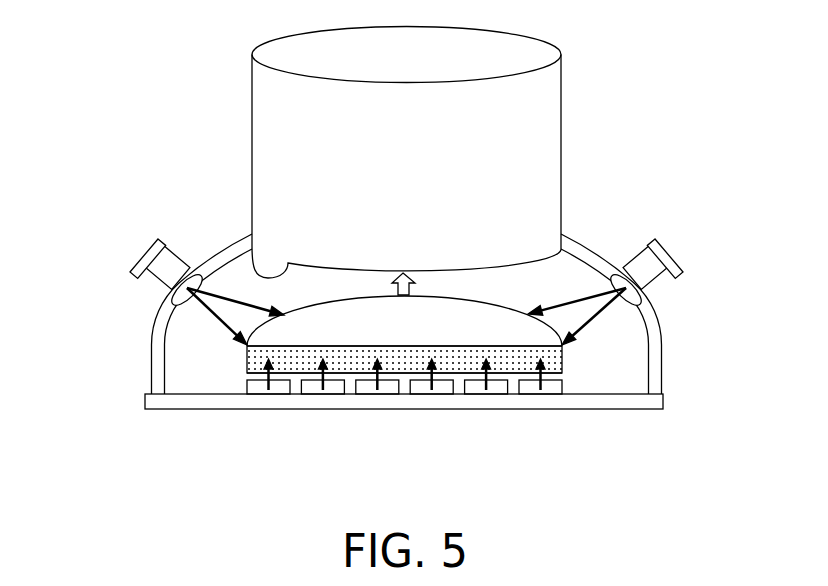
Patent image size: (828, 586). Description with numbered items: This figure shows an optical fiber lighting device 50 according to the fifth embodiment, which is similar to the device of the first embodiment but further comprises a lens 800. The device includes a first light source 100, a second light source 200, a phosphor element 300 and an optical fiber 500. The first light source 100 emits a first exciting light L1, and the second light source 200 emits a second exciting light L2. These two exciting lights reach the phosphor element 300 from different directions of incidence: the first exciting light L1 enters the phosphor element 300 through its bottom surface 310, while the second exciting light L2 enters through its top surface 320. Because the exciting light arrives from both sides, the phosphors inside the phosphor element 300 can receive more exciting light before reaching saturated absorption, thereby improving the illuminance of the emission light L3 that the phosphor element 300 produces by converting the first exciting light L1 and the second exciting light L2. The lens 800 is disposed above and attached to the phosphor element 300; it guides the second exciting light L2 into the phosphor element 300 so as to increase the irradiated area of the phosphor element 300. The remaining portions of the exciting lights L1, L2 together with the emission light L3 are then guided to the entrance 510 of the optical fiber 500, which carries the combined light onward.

The optical fiber lighting device 50 is at (58, 15).
The first light source 100 is at (259, 388).
The second light source 200 is at (153, 278).
The phosphor element 300 is at (405, 362).
The bottom surface 310 is at (513, 374).
The top surface 320 is at (357, 347).
The optical fiber 500 is at (540, 143).
The entrance 510 is at (236, 258).
The lens 800 is at (465, 327).
The first exciting light L1 is at (434, 374).
The second exciting light L2 is at (406, 311).
The emission light L3 is at (419, 286).